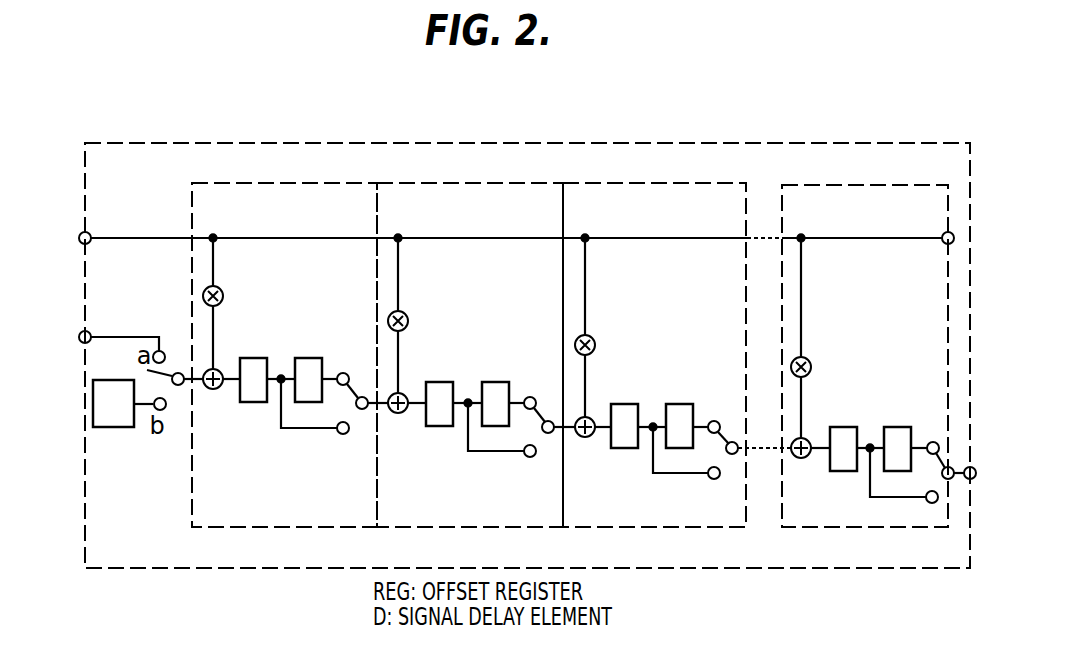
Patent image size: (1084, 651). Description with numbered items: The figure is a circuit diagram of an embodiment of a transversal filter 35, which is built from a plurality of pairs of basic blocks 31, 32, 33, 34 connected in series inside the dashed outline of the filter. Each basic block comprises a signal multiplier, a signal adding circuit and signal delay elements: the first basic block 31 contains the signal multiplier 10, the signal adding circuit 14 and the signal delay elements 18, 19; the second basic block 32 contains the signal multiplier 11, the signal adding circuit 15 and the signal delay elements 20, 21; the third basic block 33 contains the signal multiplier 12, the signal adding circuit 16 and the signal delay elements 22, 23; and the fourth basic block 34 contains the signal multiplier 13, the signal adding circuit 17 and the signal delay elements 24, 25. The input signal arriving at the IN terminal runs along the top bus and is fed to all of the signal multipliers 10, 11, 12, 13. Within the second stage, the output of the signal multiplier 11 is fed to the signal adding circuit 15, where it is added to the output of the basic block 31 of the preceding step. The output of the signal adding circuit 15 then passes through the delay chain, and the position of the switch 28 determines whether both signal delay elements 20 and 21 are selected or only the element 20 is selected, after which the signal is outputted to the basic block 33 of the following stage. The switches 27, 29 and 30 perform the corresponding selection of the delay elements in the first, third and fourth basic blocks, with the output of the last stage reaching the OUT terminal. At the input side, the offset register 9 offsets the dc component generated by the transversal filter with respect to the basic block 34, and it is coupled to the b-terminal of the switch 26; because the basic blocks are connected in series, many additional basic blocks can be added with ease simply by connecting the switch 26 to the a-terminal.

The offset register 9 is at (118, 378).
The signal multiplier 10 is at (223, 292).
The signal multiplier 11 is at (406, 314).
The signal multiplier 12 is at (594, 338).
The signal multiplier 13 is at (808, 359).
The signal adding circuit 14 is at (219, 370).
The signal adding circuit 15 is at (402, 413).
The signal adding circuit 16 is at (590, 437).
The signal adding circuit 17 is at (804, 459).
The signal delay element 18 is at (244, 403).
The signal delay element 19 is at (301, 357).
The signal delay element 20 is at (431, 381).
The signal delay element 21 is at (490, 381).
The signal delay element 22 is at (625, 403).
The signal delay element 23 is at (700, 403).
The signal delay element 24 is at (840, 426).
The signal delay element 25 is at (888, 426).
The switch 26 is at (177, 371).
The switch 27 is at (350, 434).
The switch 28 is at (545, 434).
The switch 29 is at (735, 459).
The switch 30 is at (937, 446).
The basic block 31 is at (240, 182).
The basic block 32 is at (409, 183).
The basic block 33 is at (634, 182).
The basic block 34 is at (816, 185).
The transversal filter 35 is at (353, 142).